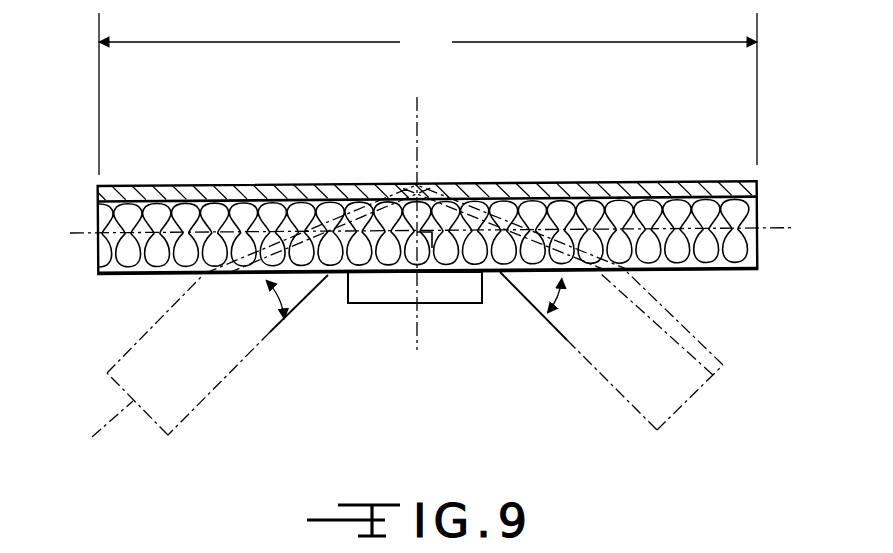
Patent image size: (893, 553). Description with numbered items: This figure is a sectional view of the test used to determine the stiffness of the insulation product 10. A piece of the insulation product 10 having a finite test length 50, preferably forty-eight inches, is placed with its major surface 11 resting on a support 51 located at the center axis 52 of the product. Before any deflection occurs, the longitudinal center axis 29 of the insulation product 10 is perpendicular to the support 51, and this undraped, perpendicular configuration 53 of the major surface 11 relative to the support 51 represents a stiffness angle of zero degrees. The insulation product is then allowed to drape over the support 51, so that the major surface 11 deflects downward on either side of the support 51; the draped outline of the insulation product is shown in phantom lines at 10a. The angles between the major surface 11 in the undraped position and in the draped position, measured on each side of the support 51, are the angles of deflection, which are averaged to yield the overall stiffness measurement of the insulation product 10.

The insulation product 10 is at (98, 223).
The draped outline of the insulation product 10a is at (88, 425).
The major surface 11 is at (219, 388).
The longitudinal center axis 29 is at (773, 222).
The test length 50 is at (428, 94).
The support 51 is at (432, 305).
The center axis 52 is at (420, 102).
The perpendicular configuration 53 is at (420, 246).